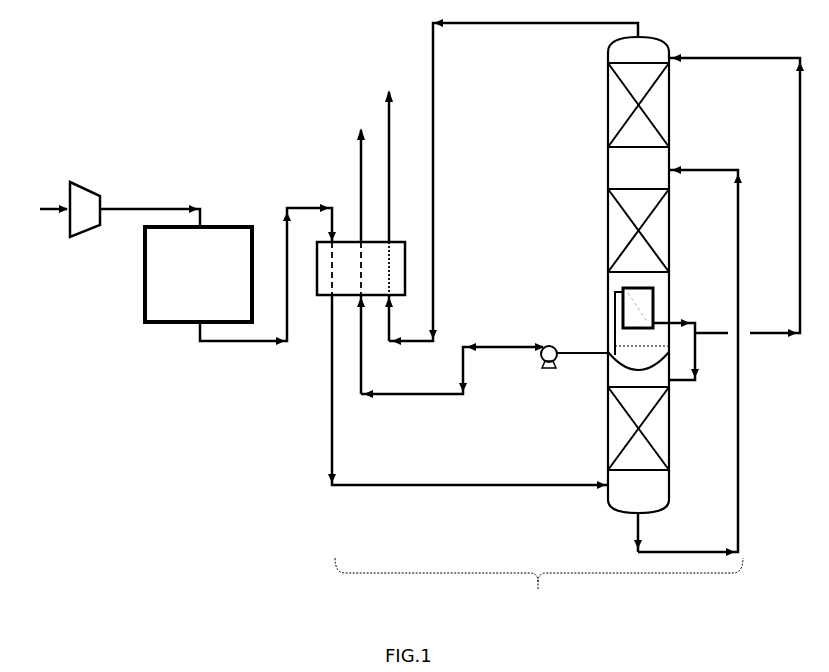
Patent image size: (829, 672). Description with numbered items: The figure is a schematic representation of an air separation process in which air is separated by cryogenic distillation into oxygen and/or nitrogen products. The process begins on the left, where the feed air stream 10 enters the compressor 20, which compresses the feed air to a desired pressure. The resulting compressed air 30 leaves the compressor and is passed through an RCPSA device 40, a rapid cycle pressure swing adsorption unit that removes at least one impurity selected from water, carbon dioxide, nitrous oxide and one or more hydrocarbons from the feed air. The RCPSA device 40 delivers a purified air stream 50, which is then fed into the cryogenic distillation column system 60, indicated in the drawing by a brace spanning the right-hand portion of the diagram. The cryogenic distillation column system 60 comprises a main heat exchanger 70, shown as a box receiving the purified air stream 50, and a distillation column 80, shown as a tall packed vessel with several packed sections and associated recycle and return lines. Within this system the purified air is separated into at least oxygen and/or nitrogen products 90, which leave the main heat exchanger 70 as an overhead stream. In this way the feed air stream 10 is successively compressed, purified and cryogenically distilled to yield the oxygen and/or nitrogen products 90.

The feed air stream 10 is at (57, 213).
The compressor 20 is at (90, 185).
The compressed air 30 is at (172, 205).
The RCPSA device 40 is at (170, 328).
The purified air stream 50 is at (240, 342).
The cryogenic distillation column system 60 is at (539, 587).
The main heat exchanger 70 is at (410, 263).
The distillation column 80 is at (672, 147).
The oxygen and/or nitrogen products 90 is at (357, 195).